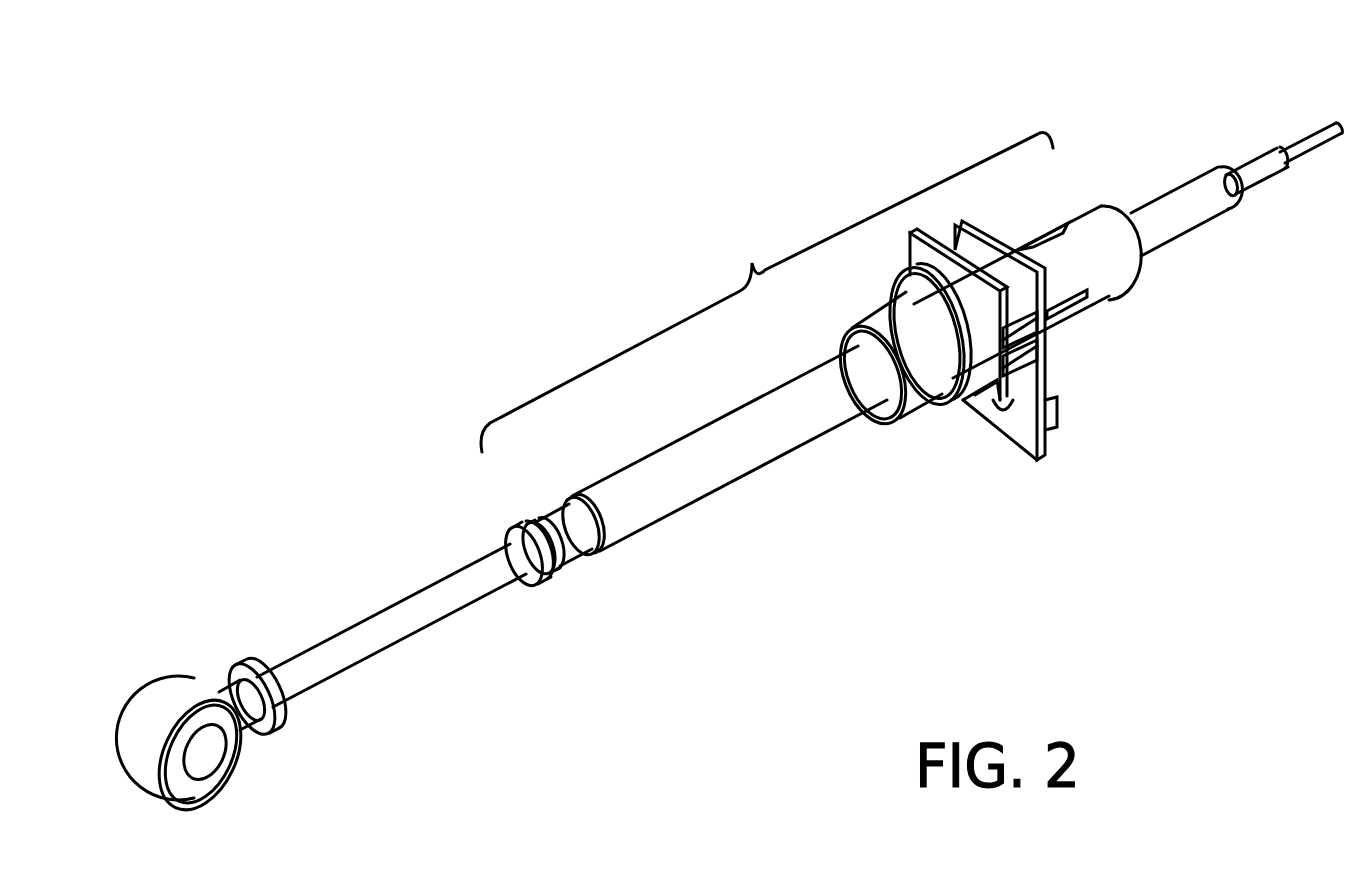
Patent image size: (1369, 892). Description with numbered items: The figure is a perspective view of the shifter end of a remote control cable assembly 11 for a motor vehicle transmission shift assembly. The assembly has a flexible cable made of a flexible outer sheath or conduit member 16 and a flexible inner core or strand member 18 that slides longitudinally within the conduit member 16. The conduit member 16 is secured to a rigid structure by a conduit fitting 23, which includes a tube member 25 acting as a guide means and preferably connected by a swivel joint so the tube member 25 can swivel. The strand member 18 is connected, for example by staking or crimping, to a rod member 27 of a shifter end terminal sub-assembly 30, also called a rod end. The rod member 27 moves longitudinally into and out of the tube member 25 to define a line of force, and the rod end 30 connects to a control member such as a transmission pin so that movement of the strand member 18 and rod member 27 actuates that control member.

The remote control cable assembly 11 is at (562, 146).
The conduit member 16 is at (1192, 182).
The strand member 18 is at (1316, 133).
The conduit fitting 23 is at (752, 263).
The tube member 25 is at (787, 453).
The rod member 27 is at (418, 634).
The shifter end terminal sub-assembly 30 is at (150, 680).